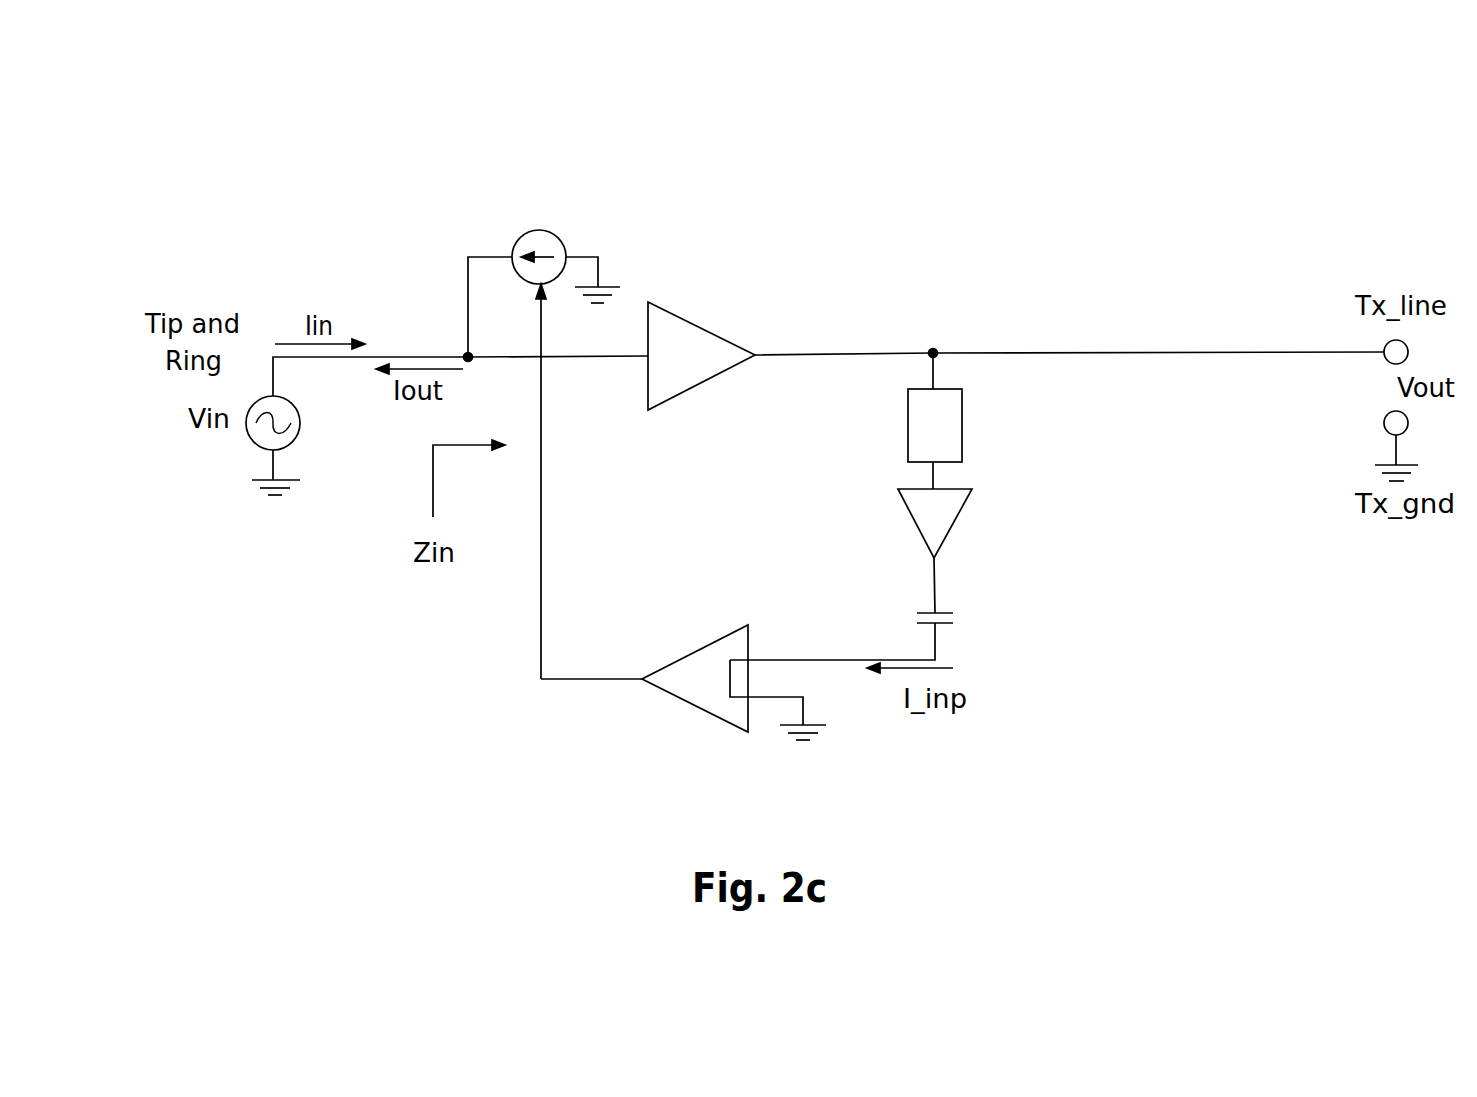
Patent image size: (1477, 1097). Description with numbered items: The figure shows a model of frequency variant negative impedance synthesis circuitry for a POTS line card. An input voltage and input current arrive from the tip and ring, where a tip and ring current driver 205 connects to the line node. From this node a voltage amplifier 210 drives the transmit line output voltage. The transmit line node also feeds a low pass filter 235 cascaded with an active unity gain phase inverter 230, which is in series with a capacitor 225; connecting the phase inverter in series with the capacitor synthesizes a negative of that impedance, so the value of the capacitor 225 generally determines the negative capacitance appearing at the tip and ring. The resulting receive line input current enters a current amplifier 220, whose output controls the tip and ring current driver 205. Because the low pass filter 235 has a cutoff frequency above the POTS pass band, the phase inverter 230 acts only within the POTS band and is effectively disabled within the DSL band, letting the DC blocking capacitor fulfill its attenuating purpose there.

The tip and ring current driver 205 is at (539, 393).
The voltage amplifier 210 is at (734, 317).
The current amplifier 220 is at (701, 701).
The capacitor 225 is at (923, 626).
The phase inverter 230 is at (1039, 551).
The low pass filter 235 is at (1051, 421).